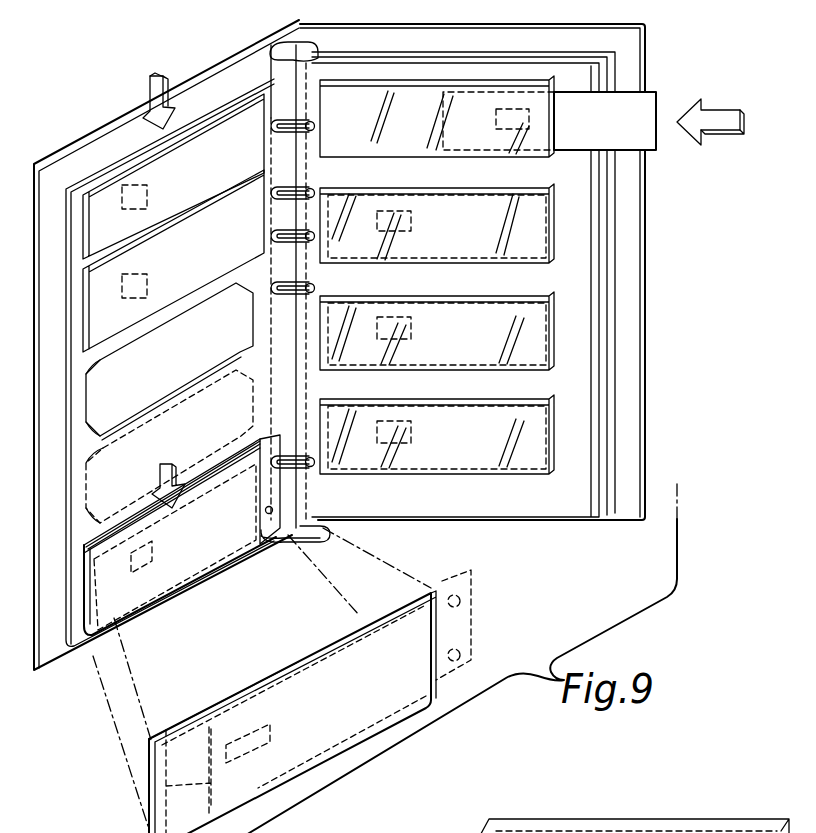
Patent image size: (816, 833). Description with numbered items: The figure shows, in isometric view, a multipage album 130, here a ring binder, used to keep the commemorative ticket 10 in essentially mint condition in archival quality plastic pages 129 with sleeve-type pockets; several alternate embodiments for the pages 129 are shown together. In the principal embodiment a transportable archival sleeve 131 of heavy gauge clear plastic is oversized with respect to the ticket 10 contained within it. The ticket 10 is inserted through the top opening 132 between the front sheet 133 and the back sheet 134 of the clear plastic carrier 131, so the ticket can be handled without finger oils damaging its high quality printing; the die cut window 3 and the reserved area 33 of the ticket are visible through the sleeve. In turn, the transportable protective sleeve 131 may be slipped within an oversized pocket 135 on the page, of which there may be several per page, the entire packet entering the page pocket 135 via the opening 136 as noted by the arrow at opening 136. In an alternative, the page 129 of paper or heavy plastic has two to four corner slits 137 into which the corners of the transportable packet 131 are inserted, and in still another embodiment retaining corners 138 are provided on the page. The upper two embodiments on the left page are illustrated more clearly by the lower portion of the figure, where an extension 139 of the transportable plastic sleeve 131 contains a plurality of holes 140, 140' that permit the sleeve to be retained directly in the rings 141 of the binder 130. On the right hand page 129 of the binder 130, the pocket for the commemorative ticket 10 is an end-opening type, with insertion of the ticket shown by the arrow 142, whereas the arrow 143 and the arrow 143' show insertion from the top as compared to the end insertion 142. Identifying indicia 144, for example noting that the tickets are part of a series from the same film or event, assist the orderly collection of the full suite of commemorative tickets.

The die cut window 3 is at (254, 725).
The commemorative ticket 10 is at (206, 172).
The reserved area 33 is at (188, 781).
The page 129 is at (325, 540).
The multipage album 130 is at (646, 469).
The transportable archival sleeve 131 is at (167, 369).
The top opening 132 is at (248, 666).
The front sheet 133 is at (140, 800).
The back sheet 134 is at (168, 725).
The oversized pocket 135 is at (79, 653).
The opening 136 is at (135, 511).
The corner slit 137 is at (112, 485).
The retaining corner 138 is at (112, 398).
The extension 139 is at (428, 577).
The hole 140 is at (485, 586).
The hole 140' is at (489, 643).
The ring 141 is at (305, 128).
The arrow 142 is at (732, 108).
The arrow 143 is at (136, 101).
The arrow 143' is at (156, 470).
The identifying indicia 144 is at (498, 479).